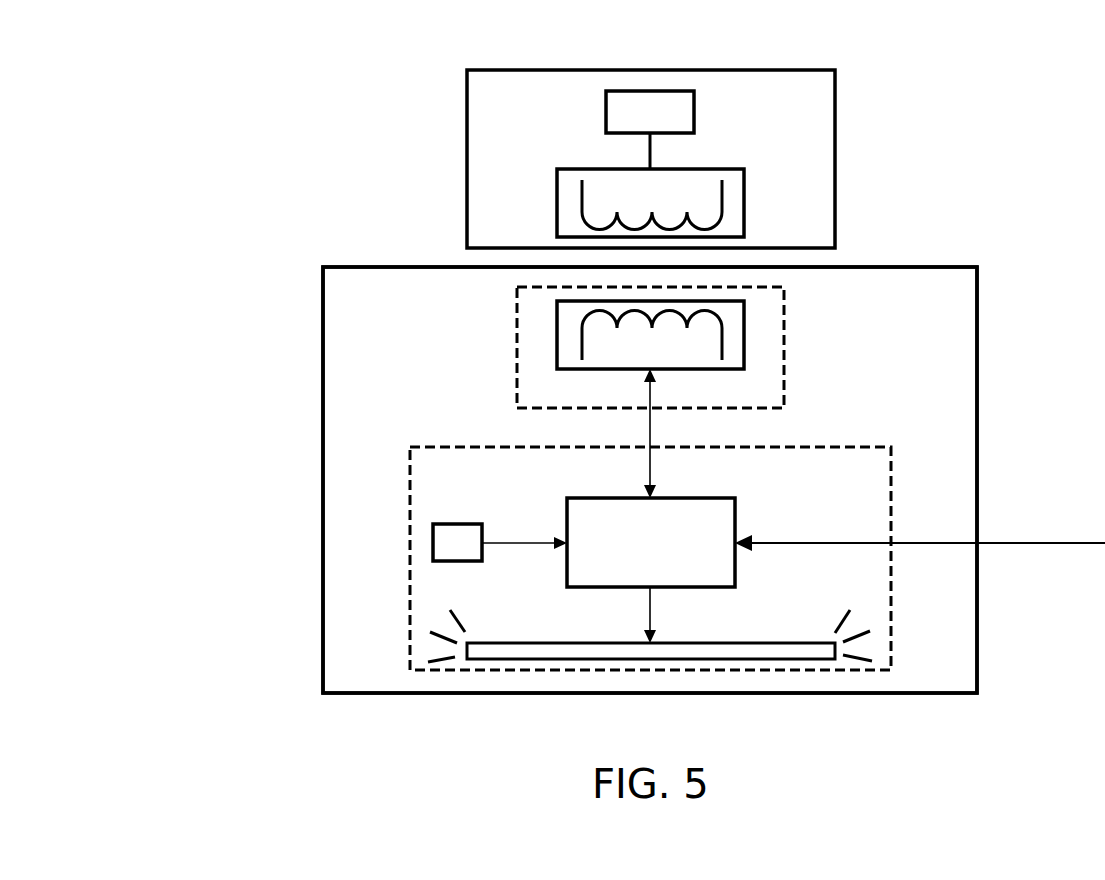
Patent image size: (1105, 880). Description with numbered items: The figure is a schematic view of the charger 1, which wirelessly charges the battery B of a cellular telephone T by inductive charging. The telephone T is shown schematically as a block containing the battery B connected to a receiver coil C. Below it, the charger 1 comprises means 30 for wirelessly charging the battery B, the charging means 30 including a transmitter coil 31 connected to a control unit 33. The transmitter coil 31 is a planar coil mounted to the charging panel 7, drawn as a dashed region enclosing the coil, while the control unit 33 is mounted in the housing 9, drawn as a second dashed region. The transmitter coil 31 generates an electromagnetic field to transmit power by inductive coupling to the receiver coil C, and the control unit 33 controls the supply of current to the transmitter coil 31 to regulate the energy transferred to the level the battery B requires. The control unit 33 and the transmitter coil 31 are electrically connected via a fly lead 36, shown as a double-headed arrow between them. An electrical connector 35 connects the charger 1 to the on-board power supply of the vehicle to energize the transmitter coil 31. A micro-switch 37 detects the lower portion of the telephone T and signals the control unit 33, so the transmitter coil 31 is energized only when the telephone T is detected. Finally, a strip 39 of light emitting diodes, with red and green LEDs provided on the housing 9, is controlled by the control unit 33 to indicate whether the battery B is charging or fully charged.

The charger 1 is at (268, 383).
The means for wirelessly charging 30 is at (448, 308).
The cellular telephone T is at (465, 160).
The battery B is at (630, 106).
The receiver coil C is at (697, 198).
The charging panel 7 is at (784, 360).
The transmitter coil 31 is at (705, 340).
The fly lead 36 is at (650, 435).
The housing 9 is at (891, 508).
The control unit 33 is at (705, 515).
The micro-switch 37 is at (450, 545).
The electrical connector 35 is at (1023, 543).
The strip of Light Emitting Diodes 39 is at (500, 650).